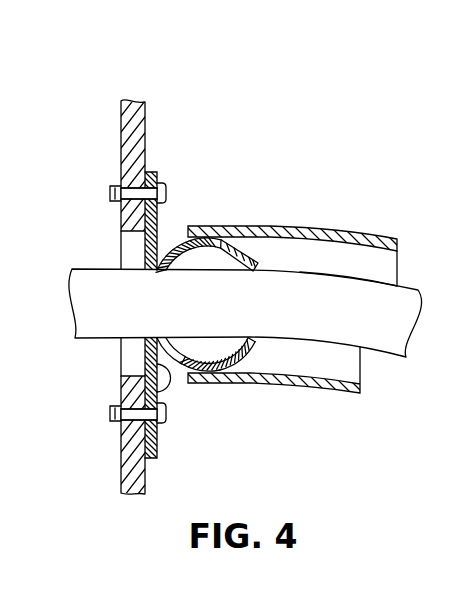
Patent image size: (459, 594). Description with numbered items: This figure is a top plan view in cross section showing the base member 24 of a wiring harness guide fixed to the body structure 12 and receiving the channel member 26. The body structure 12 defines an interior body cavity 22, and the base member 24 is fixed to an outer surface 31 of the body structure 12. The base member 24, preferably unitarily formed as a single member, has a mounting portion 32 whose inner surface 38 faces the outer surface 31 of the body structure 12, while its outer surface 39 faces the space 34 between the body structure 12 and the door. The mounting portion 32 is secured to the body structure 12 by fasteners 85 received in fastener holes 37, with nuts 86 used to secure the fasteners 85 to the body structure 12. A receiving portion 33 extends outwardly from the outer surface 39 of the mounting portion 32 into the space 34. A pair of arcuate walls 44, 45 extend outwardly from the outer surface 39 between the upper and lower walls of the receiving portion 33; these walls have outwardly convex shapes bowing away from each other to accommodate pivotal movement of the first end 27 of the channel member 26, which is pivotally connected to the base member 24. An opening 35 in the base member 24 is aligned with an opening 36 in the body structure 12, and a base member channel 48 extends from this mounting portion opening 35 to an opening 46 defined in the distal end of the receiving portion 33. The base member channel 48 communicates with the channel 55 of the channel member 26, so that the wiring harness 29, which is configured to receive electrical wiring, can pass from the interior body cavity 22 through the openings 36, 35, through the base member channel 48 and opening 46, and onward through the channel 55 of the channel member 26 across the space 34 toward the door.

The body structure 12 is at (131, 97).
The interior body cavity 22 is at (66, 138).
The base member 24 is at (166, 401).
The channel member 26 is at (317, 220).
The first end 27 is at (209, 224).
The wiring harness 29 is at (361, 273).
The outer surface 31 is at (150, 463).
The mounting portion 32 is at (157, 172).
The receiving portion 33 is at (257, 356).
The space 34 is at (194, 216).
The opening 35 is at (151, 275).
The opening 36 is at (137, 377).
The fastener holes 37 is at (137, 188).
The inner surface 38 is at (140, 219).
The outer surface 39 is at (181, 363).
The arcuate wall 44 is at (241, 246).
The arcuate wall 45 is at (243, 354).
The opening 46 is at (258, 348).
The base member channel 48 is at (203, 352).
The channel 55 is at (287, 256).
The fasteners 85 is at (166, 190).
The nuts 86 is at (112, 206).